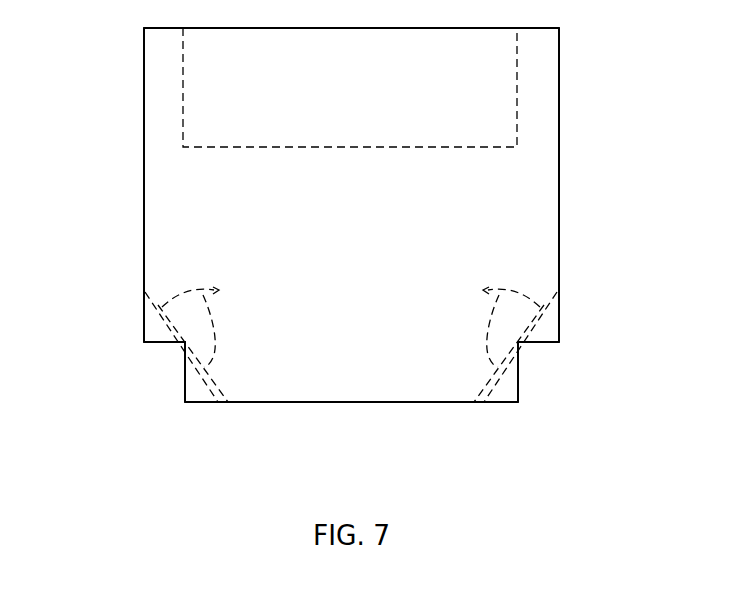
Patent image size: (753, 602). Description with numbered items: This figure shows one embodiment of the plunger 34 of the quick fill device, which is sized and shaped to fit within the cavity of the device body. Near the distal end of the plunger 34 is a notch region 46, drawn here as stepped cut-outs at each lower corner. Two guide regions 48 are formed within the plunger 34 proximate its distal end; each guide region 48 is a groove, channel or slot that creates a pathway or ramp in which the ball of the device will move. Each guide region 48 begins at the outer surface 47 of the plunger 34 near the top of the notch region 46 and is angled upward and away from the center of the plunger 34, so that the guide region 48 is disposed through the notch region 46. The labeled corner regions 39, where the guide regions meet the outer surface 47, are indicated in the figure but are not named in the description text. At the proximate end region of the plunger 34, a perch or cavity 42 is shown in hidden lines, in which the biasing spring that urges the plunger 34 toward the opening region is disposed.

The plunger 34 is at (559, 85).
The cavity 42 is at (367, 85).
The outer surface 47 is at (135, 217).
The hidden passage 39 is at (140, 293).
The guide region 48 is at (351, 321).
The notch region 46 is at (168, 363).